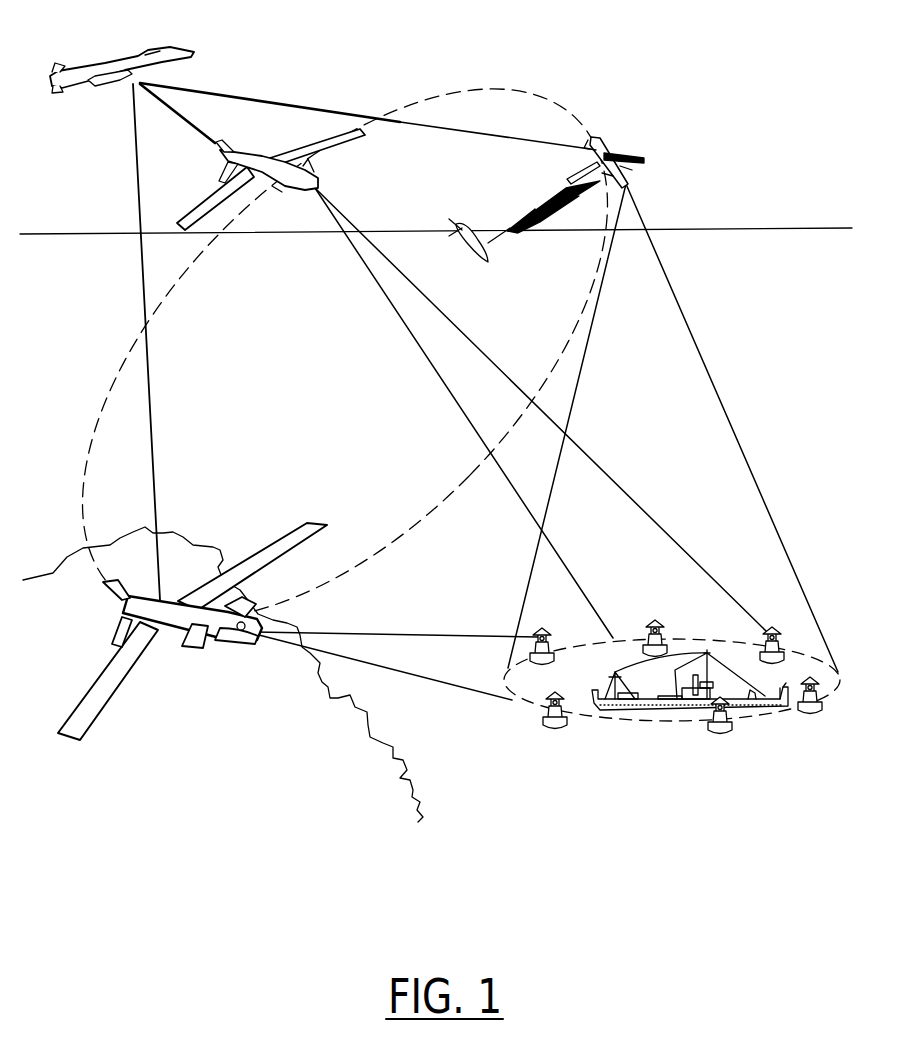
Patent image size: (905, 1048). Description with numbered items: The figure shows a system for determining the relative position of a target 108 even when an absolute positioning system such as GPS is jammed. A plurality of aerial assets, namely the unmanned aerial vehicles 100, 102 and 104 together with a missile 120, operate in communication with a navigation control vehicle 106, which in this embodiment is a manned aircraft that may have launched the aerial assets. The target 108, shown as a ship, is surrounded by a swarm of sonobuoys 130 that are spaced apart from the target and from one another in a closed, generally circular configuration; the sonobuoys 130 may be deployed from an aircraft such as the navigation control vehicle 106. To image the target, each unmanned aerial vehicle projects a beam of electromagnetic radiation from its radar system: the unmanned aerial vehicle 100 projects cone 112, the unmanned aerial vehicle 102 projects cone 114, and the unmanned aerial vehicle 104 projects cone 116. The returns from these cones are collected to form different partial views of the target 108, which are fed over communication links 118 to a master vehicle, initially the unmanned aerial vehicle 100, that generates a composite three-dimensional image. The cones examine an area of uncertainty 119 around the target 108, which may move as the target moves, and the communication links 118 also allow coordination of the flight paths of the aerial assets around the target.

The unmanned aerial vehicle 100 is at (622, 153).
The unmanned aerial vehicle 102 is at (268, 153).
The unmanned aerial vehicle 104 is at (120, 608).
The navigation control vehicle 106 is at (104, 68).
The target 108 is at (768, 708).
The cone 112 is at (678, 300).
The cone 114 is at (462, 294).
The cone 116 is at (450, 685).
The communication links 118 is at (504, 92).
The area of uncertainty 119 is at (677, 722).
The missile 120 is at (452, 228).
The sonobuoys 130 is at (548, 640).